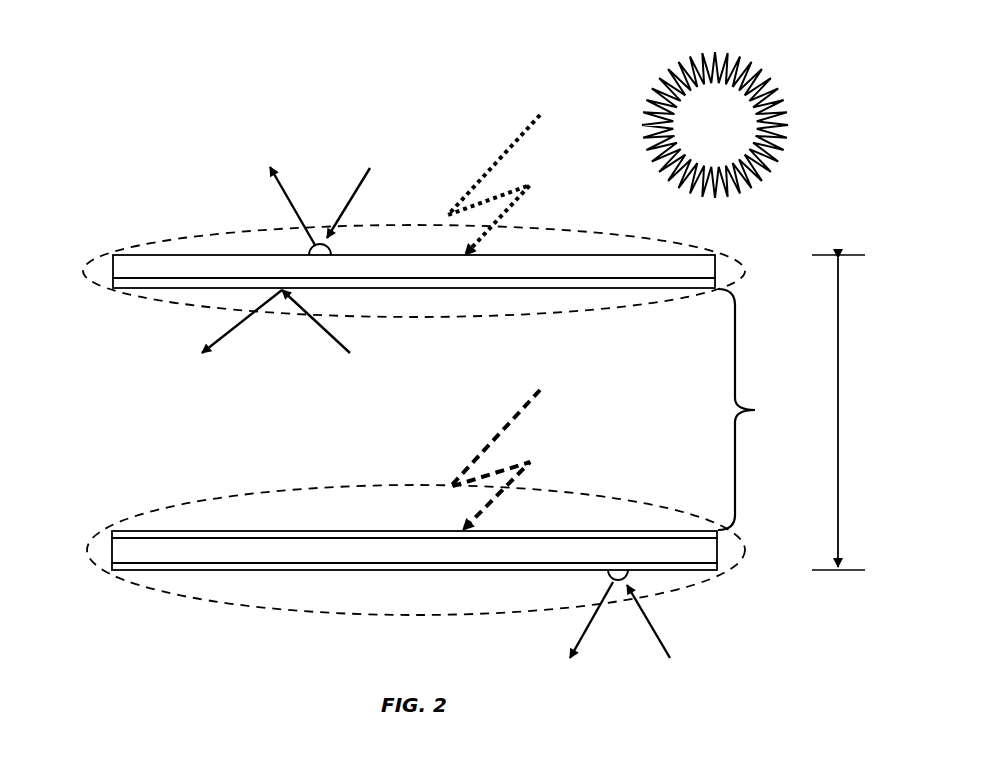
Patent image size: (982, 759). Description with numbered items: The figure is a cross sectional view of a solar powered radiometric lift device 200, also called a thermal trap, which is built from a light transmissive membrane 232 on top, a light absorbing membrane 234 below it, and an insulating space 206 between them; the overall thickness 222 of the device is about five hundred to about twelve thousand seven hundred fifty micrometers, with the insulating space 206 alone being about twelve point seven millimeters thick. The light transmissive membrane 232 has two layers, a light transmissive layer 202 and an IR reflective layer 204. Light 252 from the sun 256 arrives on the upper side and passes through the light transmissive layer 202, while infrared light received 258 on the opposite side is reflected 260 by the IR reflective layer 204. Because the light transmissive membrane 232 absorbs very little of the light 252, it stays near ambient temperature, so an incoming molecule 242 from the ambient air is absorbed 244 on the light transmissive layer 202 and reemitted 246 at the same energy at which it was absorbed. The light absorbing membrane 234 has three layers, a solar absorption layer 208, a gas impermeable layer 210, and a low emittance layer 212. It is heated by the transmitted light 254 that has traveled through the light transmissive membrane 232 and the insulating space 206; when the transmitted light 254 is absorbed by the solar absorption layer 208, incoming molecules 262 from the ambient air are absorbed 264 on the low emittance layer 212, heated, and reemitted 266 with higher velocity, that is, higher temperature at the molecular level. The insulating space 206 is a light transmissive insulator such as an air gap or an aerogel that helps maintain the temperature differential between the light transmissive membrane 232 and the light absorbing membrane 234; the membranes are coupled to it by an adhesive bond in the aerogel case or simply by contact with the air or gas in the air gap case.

The solar powered radiometric lift device 200 is at (145, 103).
The light transmissive layer 202 is at (723, 258).
The IR reflective layer 204 is at (718, 288).
The insulating space 206 is at (755, 410).
The solar absorption layer 208 is at (720, 532).
The gas impermeable layer 210 is at (715, 548).
The low emittance layer 212 is at (718, 570).
The thickness 222 is at (838, 490).
The light transmissive membrane 232 is at (142, 245).
The light absorbing membrane 234 is at (142, 515).
The incoming molecule 242 is at (360, 175).
The absorption of molecule 244 is at (320, 243).
The reemitted molecule 246 is at (283, 180).
The light 252 is at (507, 155).
The transmitted light 254 is at (520, 412).
The sun 256 is at (697, 138).
The received infrared light 258 is at (338, 340).
The reflected infrared light 260 is at (222, 338).
The incoming molecules 262 is at (658, 648).
The absorption of molecules 264 is at (632, 572).
The reemitted molecules 266 is at (580, 630).